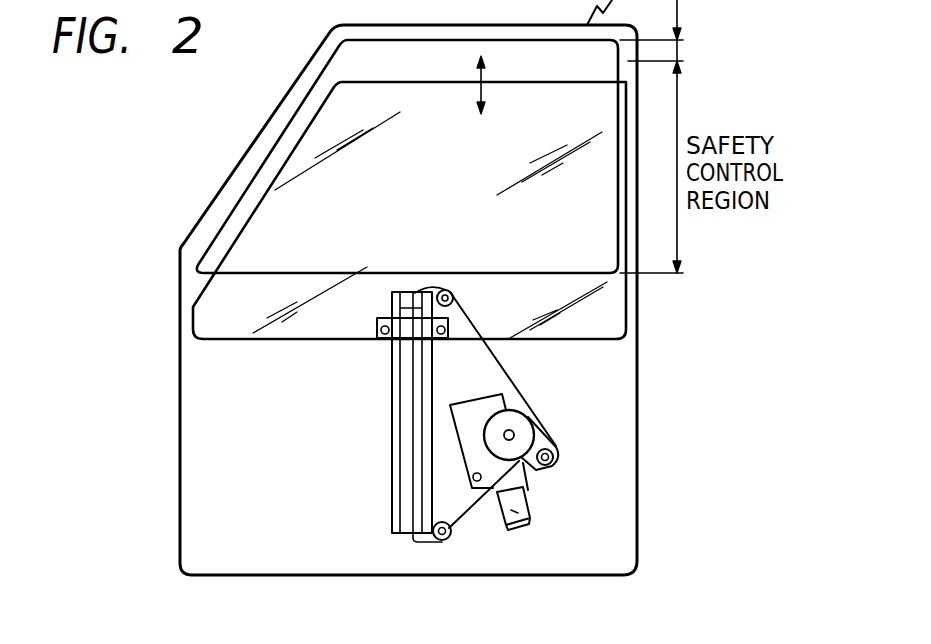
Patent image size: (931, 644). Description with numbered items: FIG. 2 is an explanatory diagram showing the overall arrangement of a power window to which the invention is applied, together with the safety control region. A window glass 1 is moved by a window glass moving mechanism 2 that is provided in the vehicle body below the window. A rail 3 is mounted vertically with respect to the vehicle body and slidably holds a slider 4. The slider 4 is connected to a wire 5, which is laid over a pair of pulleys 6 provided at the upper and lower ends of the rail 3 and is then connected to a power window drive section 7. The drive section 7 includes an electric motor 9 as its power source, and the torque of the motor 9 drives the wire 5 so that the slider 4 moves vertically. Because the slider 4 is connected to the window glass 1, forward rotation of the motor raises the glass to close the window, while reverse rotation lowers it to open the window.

The window glass 1 is at (612, 322).
The window glass moving mechanism 2 is at (562, 447).
The rail 3 is at (395, 510).
The slider 4 is at (412, 340).
The wire 5 is at (477, 512).
The pulleys 6 is at (450, 288).
The power window drive section 7 is at (548, 477).
The electric motor 9 is at (512, 512).